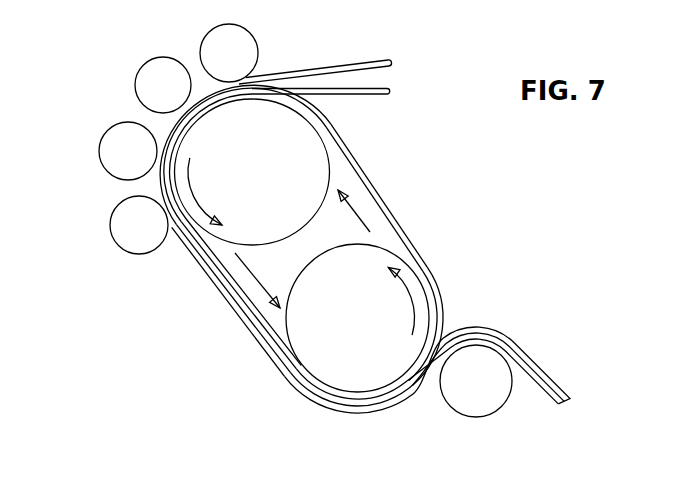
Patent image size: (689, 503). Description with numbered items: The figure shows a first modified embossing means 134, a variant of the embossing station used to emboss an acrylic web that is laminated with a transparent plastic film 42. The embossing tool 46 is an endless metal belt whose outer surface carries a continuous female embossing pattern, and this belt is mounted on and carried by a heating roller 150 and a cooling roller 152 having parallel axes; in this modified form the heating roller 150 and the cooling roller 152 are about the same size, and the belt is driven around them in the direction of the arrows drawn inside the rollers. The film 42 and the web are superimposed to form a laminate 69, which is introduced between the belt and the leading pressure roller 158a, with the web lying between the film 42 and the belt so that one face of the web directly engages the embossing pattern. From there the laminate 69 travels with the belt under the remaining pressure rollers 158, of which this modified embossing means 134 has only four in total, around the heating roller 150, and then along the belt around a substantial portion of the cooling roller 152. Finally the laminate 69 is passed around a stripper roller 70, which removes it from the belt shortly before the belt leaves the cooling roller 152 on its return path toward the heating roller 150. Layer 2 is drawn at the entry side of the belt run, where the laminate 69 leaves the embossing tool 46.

The film / web 2 is at (367, 100).
The film 42 is at (362, 63).
The embossing tool 46 is at (380, 196).
The laminate 69 is at (216, 276).
The stripper roller 70 is at (477, 405).
The first modified embossing means 134 is at (452, 282).
The heating roller 150 is at (297, 161).
The cooling roller 152 is at (318, 355).
The pressure rollers 158 is at (153, 80).
The leading pressure roller 158a is at (243, 45).